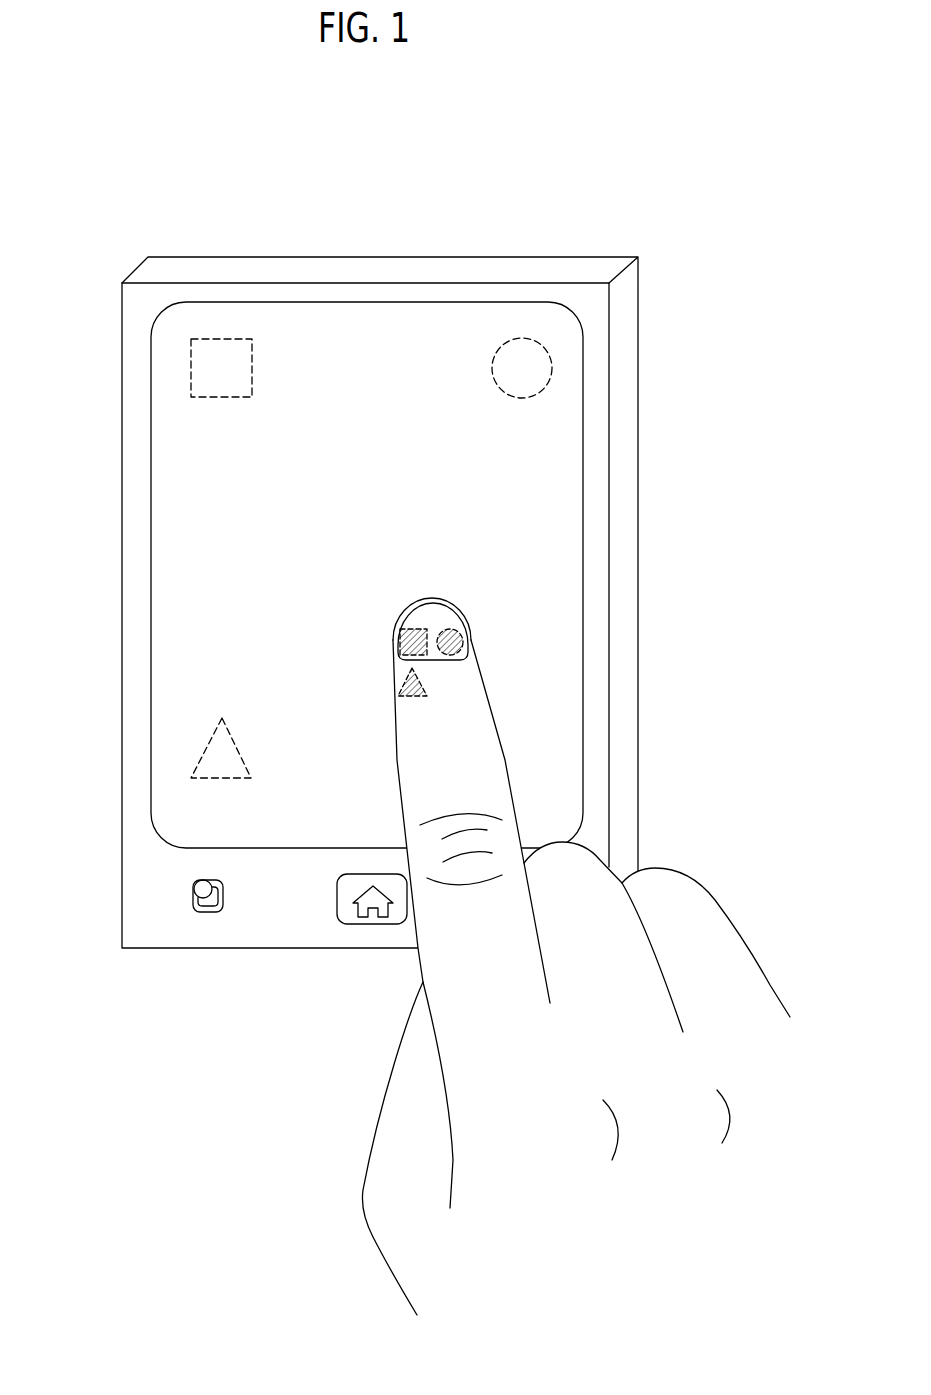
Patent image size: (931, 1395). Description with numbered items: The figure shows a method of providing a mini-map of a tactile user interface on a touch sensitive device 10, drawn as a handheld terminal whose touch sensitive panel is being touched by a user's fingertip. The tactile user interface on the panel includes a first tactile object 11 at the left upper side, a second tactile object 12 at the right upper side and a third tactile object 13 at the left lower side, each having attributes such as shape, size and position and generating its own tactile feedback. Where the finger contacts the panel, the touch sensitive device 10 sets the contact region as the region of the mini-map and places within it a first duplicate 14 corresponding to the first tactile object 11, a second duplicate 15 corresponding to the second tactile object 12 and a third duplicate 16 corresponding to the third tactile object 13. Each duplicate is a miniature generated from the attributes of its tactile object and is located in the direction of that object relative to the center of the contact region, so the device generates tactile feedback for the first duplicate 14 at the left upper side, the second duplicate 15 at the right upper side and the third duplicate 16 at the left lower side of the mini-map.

The touch sensitive device 10 is at (431, 270).
The first tactile object 11 is at (225, 352).
The second tactile object 12 is at (522, 353).
The third tactile object 13 is at (215, 756).
The first duplicate 14 is at (400, 638).
The second duplicate 15 is at (468, 642).
The third duplicate 16 is at (408, 698).